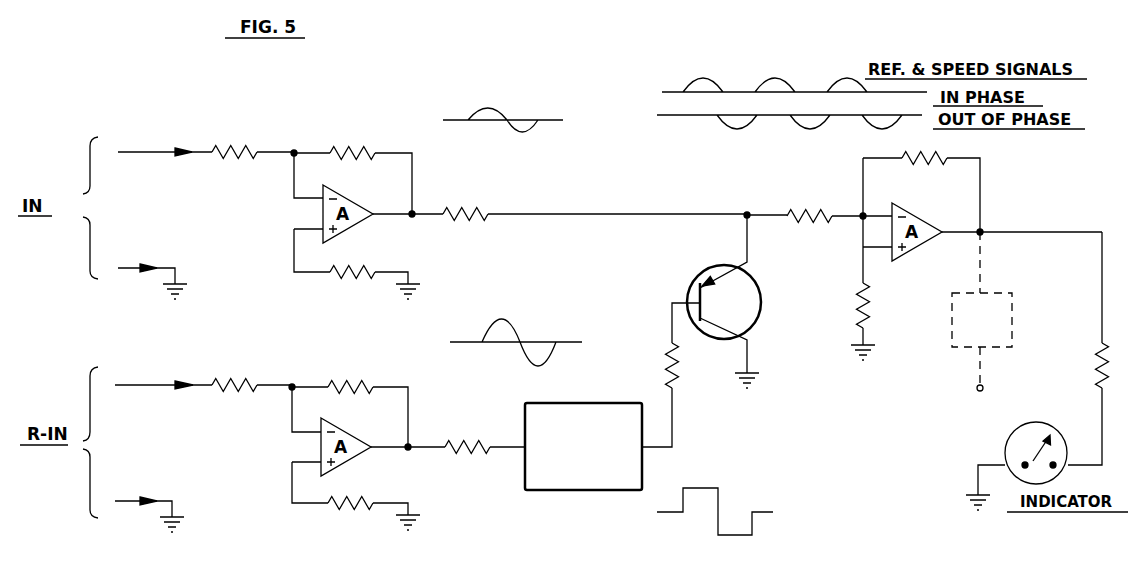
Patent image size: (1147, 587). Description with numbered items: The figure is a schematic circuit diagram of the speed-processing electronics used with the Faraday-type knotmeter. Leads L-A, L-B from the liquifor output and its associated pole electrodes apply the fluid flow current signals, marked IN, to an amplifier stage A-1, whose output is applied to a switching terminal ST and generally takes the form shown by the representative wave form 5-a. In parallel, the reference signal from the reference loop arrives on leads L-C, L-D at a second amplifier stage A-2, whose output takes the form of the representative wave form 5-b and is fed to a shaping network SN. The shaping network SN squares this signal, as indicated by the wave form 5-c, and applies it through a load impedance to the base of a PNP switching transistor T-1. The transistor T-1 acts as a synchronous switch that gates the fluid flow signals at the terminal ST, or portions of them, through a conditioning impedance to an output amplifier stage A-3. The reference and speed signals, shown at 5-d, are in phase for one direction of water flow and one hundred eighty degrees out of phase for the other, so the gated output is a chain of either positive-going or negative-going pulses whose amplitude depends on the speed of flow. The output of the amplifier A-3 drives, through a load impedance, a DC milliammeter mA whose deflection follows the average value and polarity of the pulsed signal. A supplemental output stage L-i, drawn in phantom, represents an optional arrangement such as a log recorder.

The lead L-A is at (161, 151).
The lead L-B is at (128, 269).
The lead L-C is at (146, 384).
The lead L-D is at (130, 502).
The amplifier stage A-1 is at (354, 205).
The amplifier stage A-2 is at (352, 438).
The output amplifier stage A-3 is at (920, 228).
The representative wave form 5-a is at (437, 208).
The representative wave form 5-b is at (509, 441).
The representative wave form 5-c is at (679, 428).
The reference and speed signals 5-d is at (810, 137).
The switching terminal ST is at (745, 212).
The switching transistor T-1 is at (748, 308).
The shaping network SN is at (620, 417).
The stage L-i is at (982, 311).
The DC milliammeter mA is at (1030, 440).